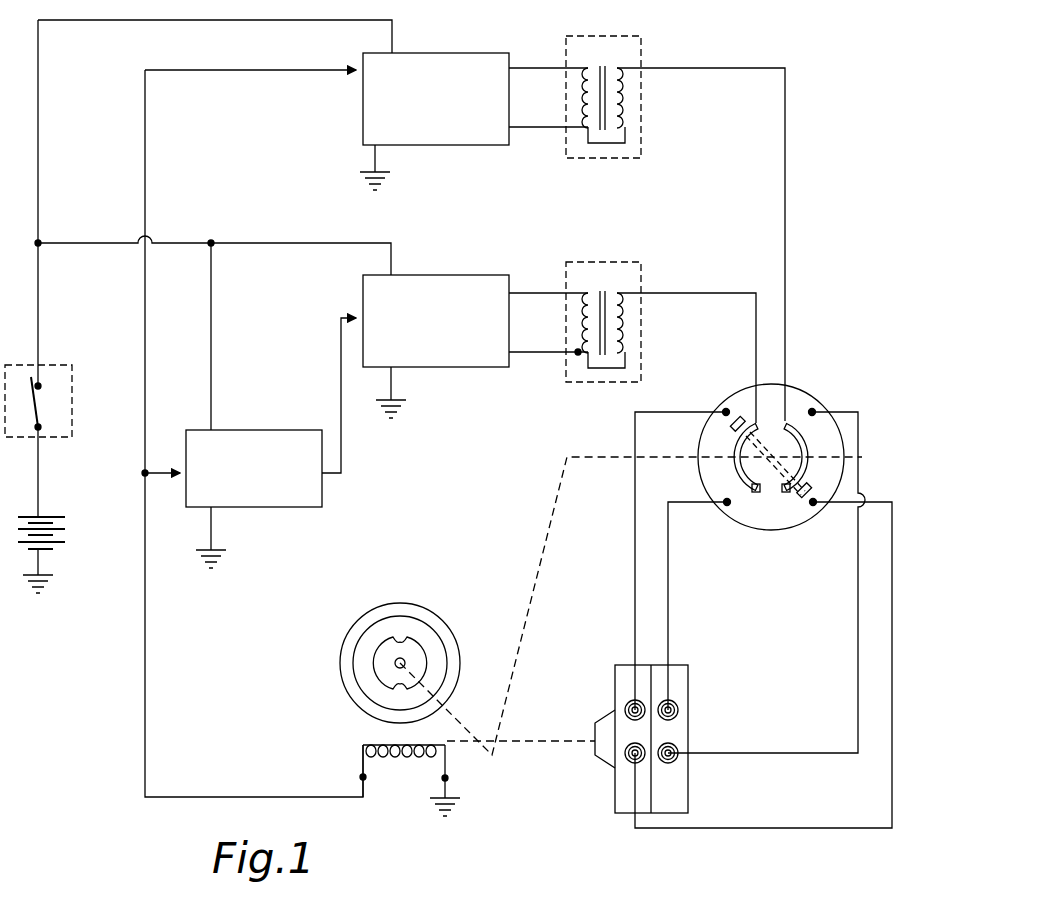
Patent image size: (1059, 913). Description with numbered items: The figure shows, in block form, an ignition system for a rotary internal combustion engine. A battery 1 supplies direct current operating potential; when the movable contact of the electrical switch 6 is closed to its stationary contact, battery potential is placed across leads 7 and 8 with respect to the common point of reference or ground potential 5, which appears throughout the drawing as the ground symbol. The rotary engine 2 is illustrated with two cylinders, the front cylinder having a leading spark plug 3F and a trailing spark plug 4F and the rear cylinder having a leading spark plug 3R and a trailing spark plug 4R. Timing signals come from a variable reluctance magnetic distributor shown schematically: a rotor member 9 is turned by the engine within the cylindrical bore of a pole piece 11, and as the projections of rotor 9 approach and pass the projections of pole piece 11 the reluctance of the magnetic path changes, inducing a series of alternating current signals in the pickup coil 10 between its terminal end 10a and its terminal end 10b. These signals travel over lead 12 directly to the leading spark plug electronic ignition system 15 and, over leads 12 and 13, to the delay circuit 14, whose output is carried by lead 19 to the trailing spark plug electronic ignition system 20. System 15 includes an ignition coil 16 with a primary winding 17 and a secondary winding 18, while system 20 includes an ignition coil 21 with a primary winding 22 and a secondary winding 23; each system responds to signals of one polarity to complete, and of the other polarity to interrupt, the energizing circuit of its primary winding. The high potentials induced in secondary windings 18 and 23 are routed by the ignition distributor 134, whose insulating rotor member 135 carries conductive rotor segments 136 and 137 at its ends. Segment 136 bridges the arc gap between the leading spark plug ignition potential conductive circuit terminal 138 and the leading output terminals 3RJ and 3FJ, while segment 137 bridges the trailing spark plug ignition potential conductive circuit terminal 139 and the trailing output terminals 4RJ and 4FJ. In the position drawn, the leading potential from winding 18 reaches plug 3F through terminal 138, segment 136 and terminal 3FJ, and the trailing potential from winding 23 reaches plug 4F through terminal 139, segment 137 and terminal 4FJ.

The battery 1 is at (55, 536).
The rotary engine 2 is at (677, 672).
The point of reference or ground potential 5 is at (385, 180).
The electrical switch 6 is at (72, 402).
The lead 7 is at (70, 243).
The lead 8 is at (65, 20).
The rotor member 9 is at (410, 645).
The pickup coil 10 is at (397, 752).
The terminal end of pickup coil 10a is at (362, 777).
The terminal end of pickup coil 10b is at (447, 778).
The pole piece 11 is at (452, 650).
The lead 12 is at (150, 612).
The lead 13 is at (161, 473).
The delay circuit 14 is at (275, 436).
The leading spark plug electronic ignition system 15 is at (478, 62).
The ignition coil 16 is at (641, 50).
The primary winding 17 is at (580, 98).
The secondary winding 18 is at (625, 97).
The output line of delay circuit 19 is at (341, 382).
The trailing spark plug electronic ignition system 20 is at (447, 278).
The ignition coil 21 is at (641, 277).
The primary winding 22 is at (580, 325).
The secondary winding 23 is at (625, 322).
The ignition distributor 134 is at (716, 398).
The rotor member 135 is at (650, 607).
The rotor segment 136 is at (793, 497).
The rotor segment 137 is at (756, 420).
The leading spark plug ignition potential conductive circuit terminal 138 is at (790, 420).
The trailing spark plug ignition potential conductive circuit terminal 139 is at (750, 492).
The leading spark plug output terminal 3FJ is at (813, 504).
The leading spark plug output terminal 3RJ is at (814, 411).
The trailing spark plug output terminal 4FJ is at (724, 413).
The trailing spark plug output terminal 4RJ is at (724, 500).
The leading spark plug 3F is at (630, 757).
The leading spark plug 3R is at (672, 757).
The trailing spark plug 4F is at (628, 707).
The trailing spark plug 4R is at (672, 707).